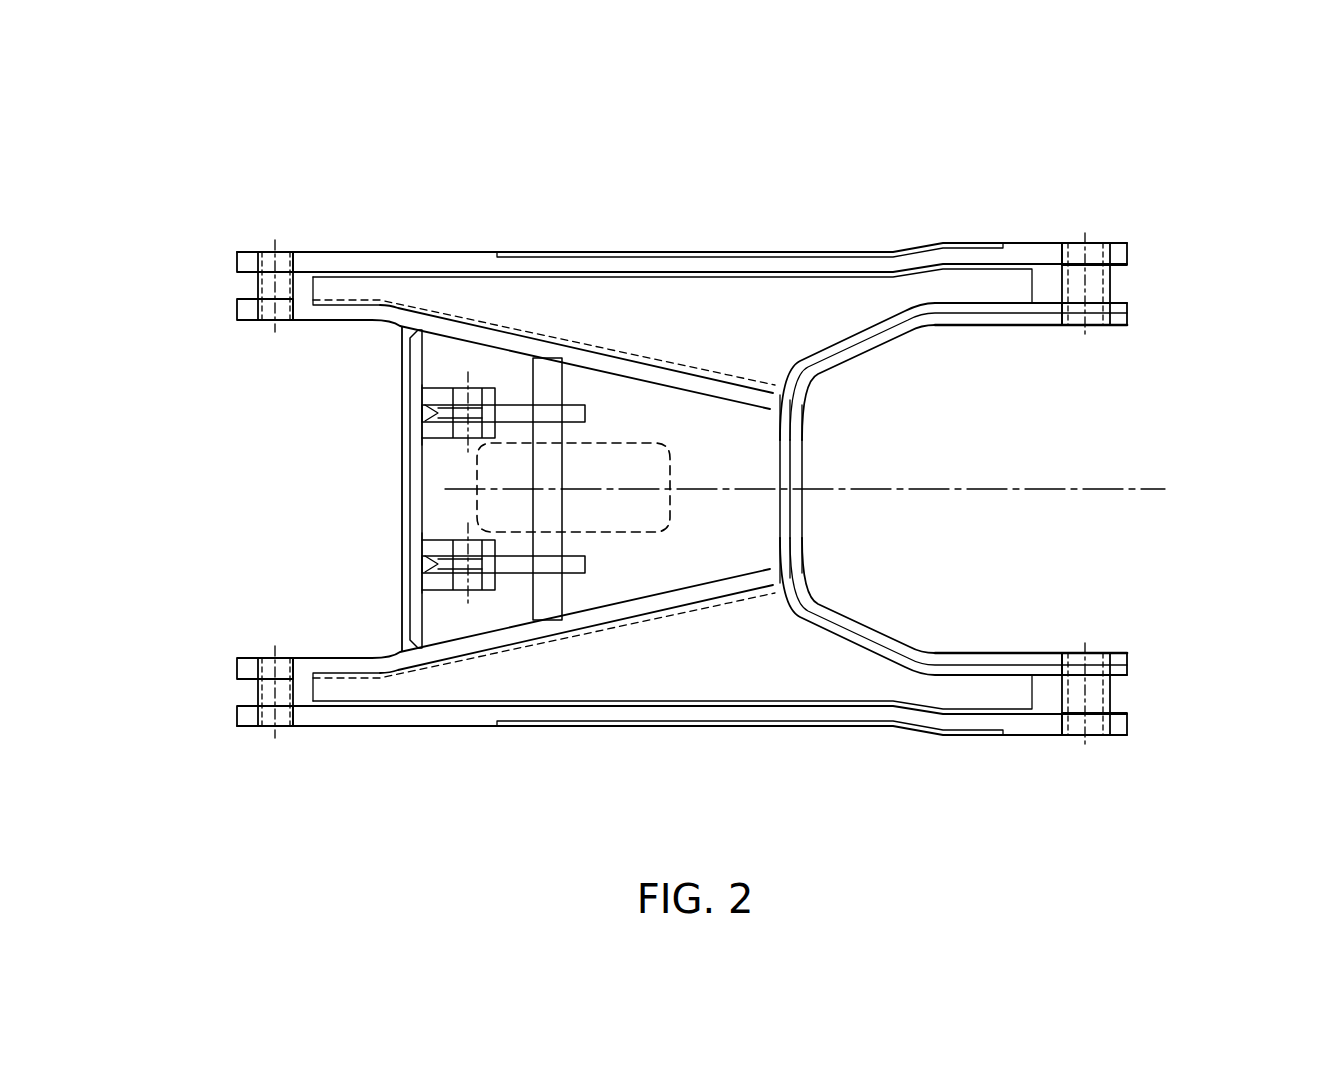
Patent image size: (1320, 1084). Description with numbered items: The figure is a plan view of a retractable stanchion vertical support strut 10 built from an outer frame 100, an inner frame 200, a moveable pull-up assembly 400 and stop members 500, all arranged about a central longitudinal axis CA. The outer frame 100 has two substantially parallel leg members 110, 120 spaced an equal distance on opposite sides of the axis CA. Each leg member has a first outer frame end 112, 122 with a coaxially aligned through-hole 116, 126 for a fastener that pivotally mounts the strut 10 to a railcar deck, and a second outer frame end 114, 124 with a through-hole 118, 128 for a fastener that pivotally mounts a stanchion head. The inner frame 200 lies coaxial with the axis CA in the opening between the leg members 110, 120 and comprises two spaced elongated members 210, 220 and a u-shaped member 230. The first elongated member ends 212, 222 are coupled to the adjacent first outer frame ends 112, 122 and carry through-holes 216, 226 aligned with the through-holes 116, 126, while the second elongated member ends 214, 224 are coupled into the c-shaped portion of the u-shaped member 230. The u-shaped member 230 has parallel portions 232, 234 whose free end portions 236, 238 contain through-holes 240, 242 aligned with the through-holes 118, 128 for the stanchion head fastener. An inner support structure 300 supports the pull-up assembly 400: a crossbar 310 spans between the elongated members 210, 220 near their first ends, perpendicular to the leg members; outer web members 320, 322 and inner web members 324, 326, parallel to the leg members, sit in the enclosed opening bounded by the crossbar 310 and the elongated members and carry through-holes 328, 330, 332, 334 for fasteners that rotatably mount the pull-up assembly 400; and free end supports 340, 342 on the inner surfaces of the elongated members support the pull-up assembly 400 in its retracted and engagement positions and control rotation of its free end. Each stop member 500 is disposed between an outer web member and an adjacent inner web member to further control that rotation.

The retractable stanchion vertical support strut 10 is at (790, 113).
The outer frame 100 is at (1039, 224).
The leg member 110 is at (713, 250).
The first outer frame end 112 is at (232, 250).
The second outer frame end 114 is at (1128, 243).
The through-hole 116 is at (290, 250).
The through-hole 118 is at (1073, 252).
The leg member 120 is at (675, 735).
The first outer frame end 122 is at (235, 727).
The second outer frame end 124 is at (1128, 735).
The through-hole 126 is at (280, 715).
The through-hole 128 is at (1077, 728).
The inner frame 200 is at (1142, 312).
The elongated member 210 is at (383, 322).
The first elongated member end 212 is at (237, 308).
The second elongated member end 214 is at (775, 392).
The through-hole 216 is at (270, 325).
The elongated member 220 is at (382, 653).
The first elongated member end 222 is at (237, 665).
The second elongated member end 224 is at (775, 585).
The through-hole 226 is at (268, 653).
The u-shaped member 230 is at (865, 360).
The parallel portion 232 is at (1047, 302).
The parallel portion 234 is at (1045, 678).
The free end portion 236 is at (1128, 325).
The free end portion 238 is at (1128, 653).
The through-hole 240 is at (1077, 317).
The through-hole 242 is at (1072, 660).
The inner support structure 300 is at (390, 532).
The crossbar 310 is at (402, 545).
The outer web member 320 is at (498, 387).
The outer web member 322 is at (497, 588).
The inner web member 324 is at (410, 448).
The inner web member 326 is at (417, 527).
The through-hole 328 is at (465, 387).
The through-hole 330 is at (463, 582).
The through-hole 332 is at (440, 450).
The through-hole 334 is at (437, 543).
The free end support 340 is at (548, 375).
The free end support 342 is at (547, 602).
The moveable pull-up assembly 400 is at (530, 477).
The stop member 500 is at (420, 400).
The central longitudinal axis CA is at (1130, 487).